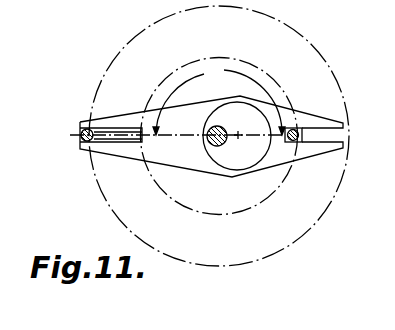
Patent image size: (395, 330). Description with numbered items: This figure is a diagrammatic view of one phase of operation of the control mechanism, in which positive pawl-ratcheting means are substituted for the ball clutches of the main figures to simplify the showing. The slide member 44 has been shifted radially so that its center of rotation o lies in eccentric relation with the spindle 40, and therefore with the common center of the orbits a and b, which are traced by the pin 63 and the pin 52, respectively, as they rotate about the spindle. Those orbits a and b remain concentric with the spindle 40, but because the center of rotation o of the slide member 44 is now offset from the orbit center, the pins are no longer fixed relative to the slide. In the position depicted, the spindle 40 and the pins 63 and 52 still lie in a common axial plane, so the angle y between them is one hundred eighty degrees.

The orbit of pin 63 a is at (95, 96).
The orbit of pin 52 b is at (288, 99).
The angle y is at (219, 100).
The center of rotation of slide member o is at (240, 137).
The slide member 44 is at (131, 106).
The pin 52 is at (298, 128).
The spindle 40 is at (222, 129).
The pin 63 is at (81, 136).